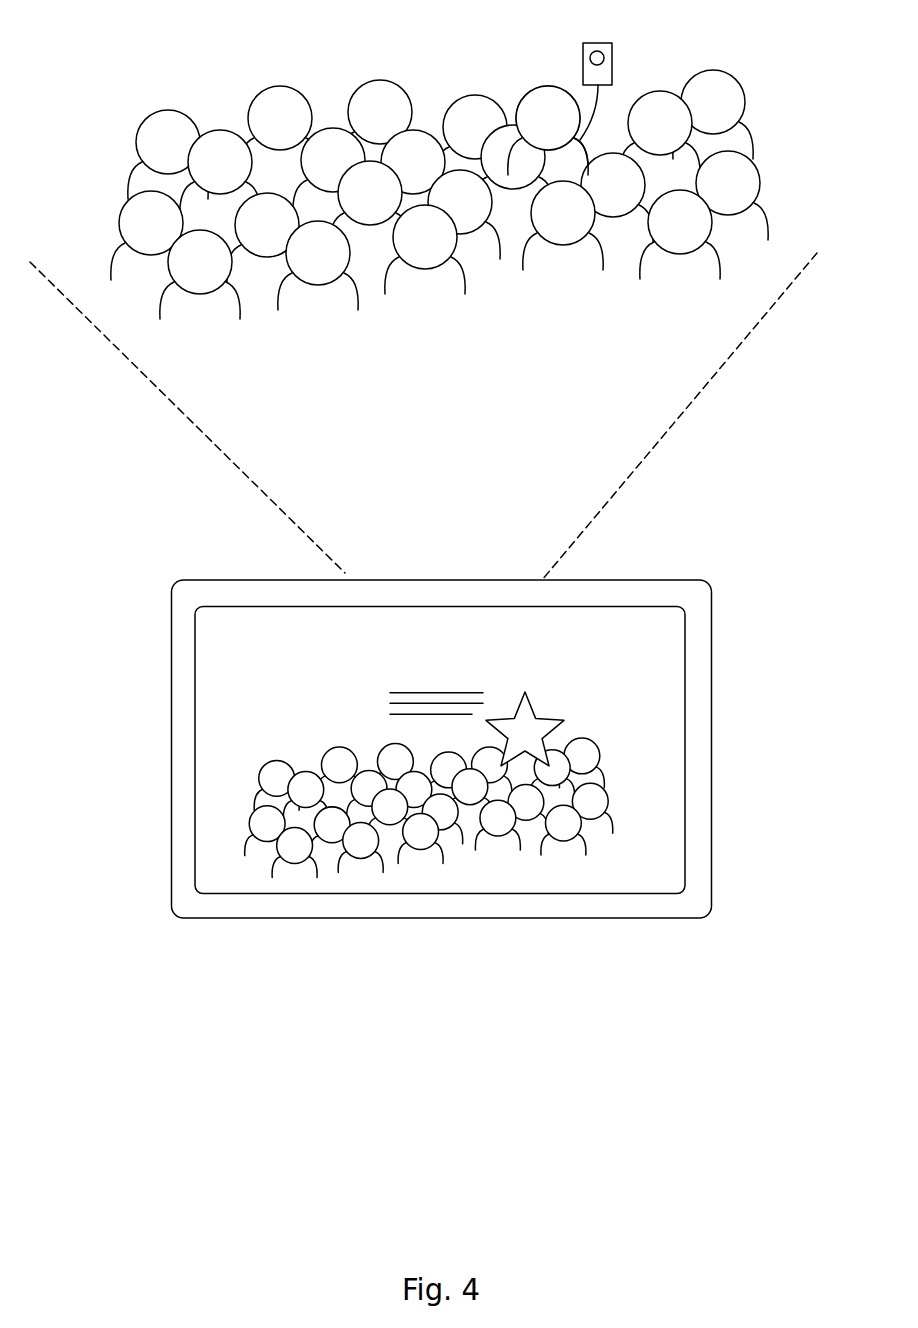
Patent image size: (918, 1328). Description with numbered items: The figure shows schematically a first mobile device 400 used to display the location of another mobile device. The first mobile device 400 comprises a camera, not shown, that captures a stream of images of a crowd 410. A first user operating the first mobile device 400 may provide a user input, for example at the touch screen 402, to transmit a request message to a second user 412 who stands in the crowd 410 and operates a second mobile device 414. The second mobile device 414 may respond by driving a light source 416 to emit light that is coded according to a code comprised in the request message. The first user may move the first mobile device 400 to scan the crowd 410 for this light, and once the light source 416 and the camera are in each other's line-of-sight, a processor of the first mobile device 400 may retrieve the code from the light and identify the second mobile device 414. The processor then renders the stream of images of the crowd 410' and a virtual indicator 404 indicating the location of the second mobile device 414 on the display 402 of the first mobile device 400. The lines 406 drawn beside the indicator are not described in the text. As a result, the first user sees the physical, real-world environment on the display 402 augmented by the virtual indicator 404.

The first mobile device 400 is at (180, 787).
The touch screen 402 is at (222, 683).
The virtual indicator 404 is at (527, 708).
The text lines overlay 406 is at (405, 699).
The crowd 410 is at (408, 168).
The stream of images of the crowd 410' is at (419, 797).
The second user 412 is at (550, 110).
The second mobile device 414 is at (661, 75).
The light source 416 is at (612, 57).